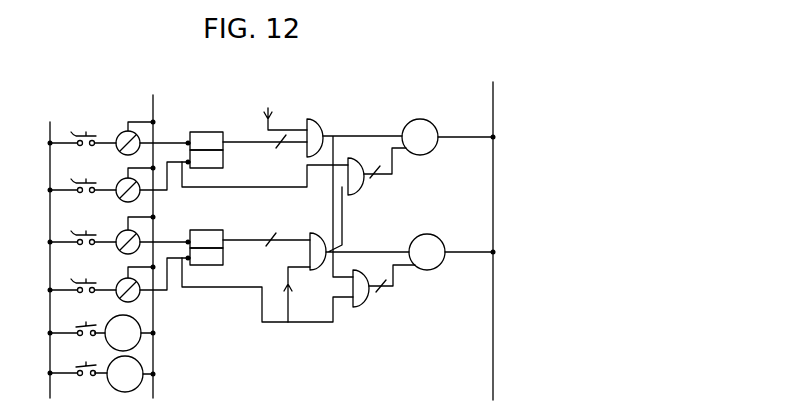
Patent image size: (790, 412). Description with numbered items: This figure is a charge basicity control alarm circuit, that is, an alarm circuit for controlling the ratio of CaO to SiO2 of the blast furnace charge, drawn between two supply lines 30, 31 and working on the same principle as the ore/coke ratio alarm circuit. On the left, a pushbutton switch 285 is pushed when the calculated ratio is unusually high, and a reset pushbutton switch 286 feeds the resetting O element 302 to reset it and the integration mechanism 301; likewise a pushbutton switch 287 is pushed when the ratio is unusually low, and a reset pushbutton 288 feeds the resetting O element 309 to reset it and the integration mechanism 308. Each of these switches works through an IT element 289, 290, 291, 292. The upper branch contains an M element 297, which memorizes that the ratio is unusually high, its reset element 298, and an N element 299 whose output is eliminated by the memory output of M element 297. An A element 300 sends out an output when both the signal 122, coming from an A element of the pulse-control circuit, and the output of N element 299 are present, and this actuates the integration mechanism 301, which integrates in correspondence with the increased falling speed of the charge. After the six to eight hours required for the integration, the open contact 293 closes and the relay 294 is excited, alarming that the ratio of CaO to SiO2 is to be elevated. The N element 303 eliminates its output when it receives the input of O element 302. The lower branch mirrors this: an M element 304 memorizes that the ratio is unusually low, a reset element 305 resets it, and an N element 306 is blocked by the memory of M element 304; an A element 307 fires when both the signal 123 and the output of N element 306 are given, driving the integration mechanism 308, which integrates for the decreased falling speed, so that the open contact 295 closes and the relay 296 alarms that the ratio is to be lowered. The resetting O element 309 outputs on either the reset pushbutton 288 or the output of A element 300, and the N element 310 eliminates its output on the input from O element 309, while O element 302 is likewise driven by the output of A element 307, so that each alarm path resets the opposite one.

The supply bus 30 is at (51, 121).
The return bus 31 is at (153, 106).
The output signal 122 is at (270, 109).
The output signal 123 is at (289, 292).
The pushbutton switch 285 is at (88, 131).
The reset pushbutton switch 286 is at (83, 172).
The pushbutton switch 287 is at (83, 225).
The reset pushbutton 288 is at (83, 272).
The IT element 289 is at (129, 155).
The IT element 290 is at (130, 203).
The IT element 291 is at (130, 254).
The IT element 292 is at (136, 297).
The open contact 293 is at (77, 318).
The relay 294 is at (129, 333).
The open contact 295 is at (78, 357).
The relay 296 is at (130, 374).
The M element 297 is at (202, 124).
The reset element 298 is at (205, 168).
The N element 299 is at (282, 146).
The A element 300 is at (318, 121).
The integration mechanism 301 is at (410, 147).
The resetting O element 302 is at (358, 192).
The N element 303 is at (379, 177).
The M element 304 is at (200, 231).
The reset element 305 is at (212, 266).
The N element 306 is at (270, 236).
The A element 307 is at (312, 233).
The integration mechanism 308 is at (417, 262).
The resetting O element 309 is at (359, 308).
The N element 310 is at (383, 291).